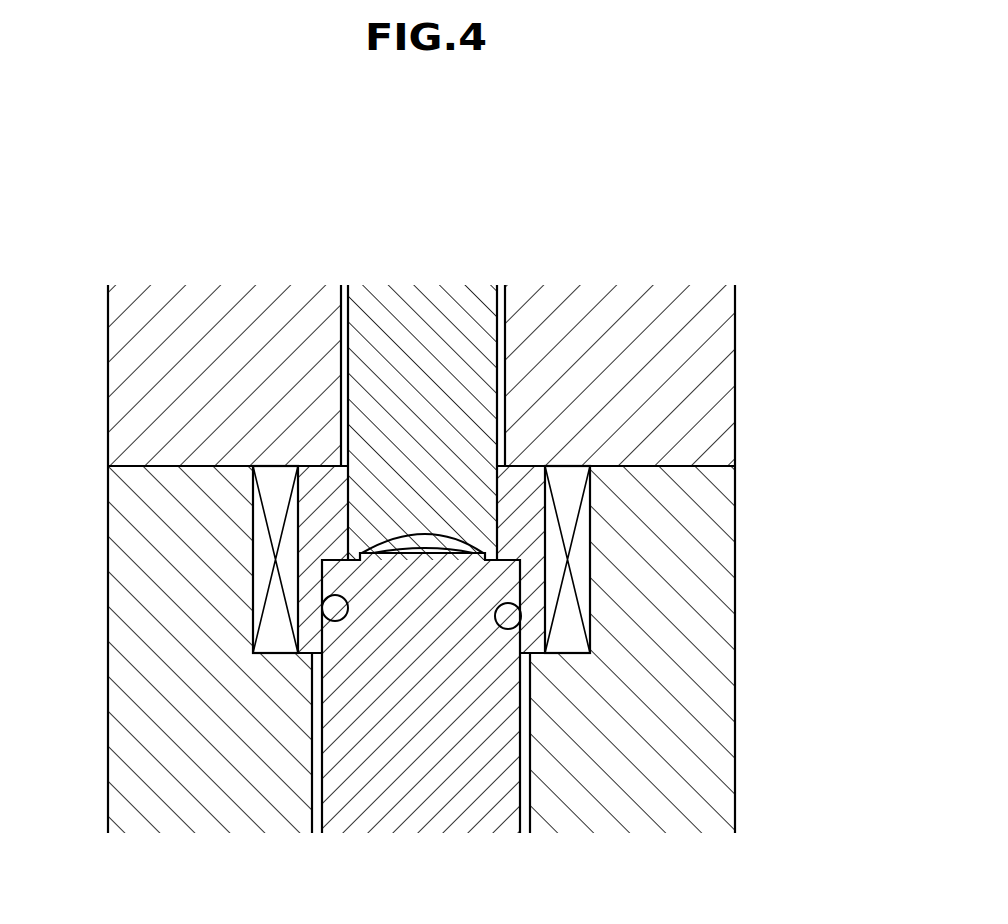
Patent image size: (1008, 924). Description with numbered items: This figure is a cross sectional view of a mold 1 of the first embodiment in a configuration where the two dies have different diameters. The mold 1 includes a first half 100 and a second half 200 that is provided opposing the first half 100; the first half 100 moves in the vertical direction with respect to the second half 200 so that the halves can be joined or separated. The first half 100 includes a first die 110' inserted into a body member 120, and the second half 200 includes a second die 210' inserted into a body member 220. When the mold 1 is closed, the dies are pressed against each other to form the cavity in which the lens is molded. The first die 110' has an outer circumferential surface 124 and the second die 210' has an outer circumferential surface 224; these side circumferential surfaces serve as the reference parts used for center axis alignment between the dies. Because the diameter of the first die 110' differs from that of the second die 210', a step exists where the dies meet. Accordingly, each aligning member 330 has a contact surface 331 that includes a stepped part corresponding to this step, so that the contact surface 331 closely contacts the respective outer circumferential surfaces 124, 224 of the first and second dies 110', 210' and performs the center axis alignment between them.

The mold 1 is at (790, 380).
The first half 100 is at (737, 405).
The first die 110' is at (397, 374).
The body member 120 is at (172, 308).
The outer circumferential surface 124 is at (505, 387).
The second half 200 is at (737, 800).
The second die 210' is at (421, 729).
The body member 220 is at (218, 810).
The outer circumferential surface 224 is at (530, 755).
The aligning member 330 is at (333, 497).
The contact surface 331 is at (340, 628).